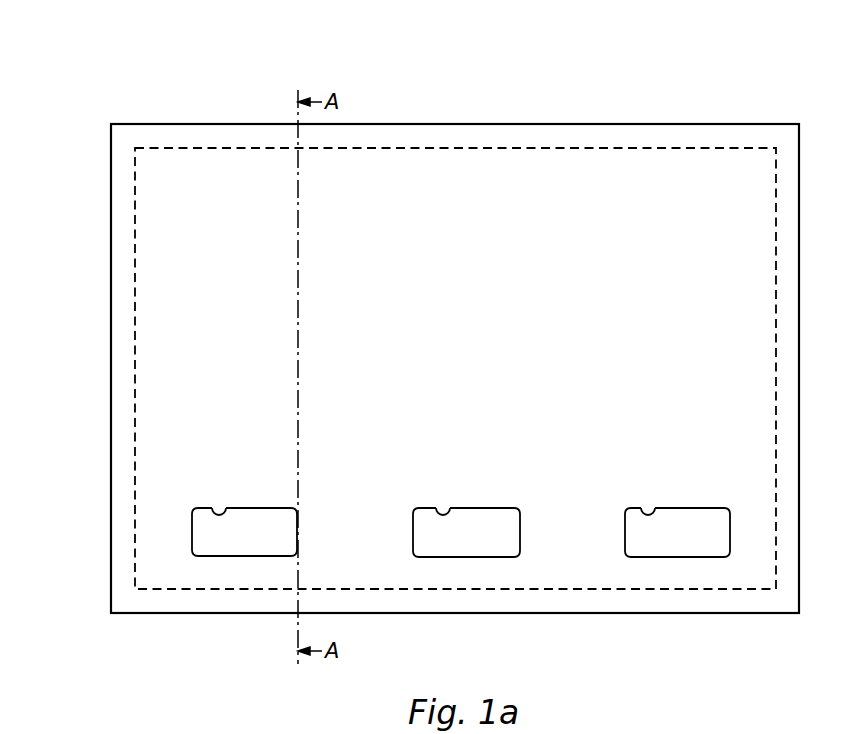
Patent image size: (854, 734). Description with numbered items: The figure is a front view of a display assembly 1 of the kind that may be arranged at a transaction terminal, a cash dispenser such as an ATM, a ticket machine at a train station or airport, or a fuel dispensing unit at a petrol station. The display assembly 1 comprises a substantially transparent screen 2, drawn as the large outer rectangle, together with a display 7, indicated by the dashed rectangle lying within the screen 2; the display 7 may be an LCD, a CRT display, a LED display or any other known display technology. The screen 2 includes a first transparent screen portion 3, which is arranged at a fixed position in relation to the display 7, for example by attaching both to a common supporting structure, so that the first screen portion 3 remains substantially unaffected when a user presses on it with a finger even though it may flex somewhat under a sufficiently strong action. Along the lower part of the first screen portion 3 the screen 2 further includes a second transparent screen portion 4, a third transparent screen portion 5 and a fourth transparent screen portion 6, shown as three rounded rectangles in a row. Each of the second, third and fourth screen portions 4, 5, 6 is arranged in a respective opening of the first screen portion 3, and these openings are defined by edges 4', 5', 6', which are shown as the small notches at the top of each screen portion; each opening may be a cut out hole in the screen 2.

The display assembly 1 is at (120, 55).
The screen 2 is at (237, 100).
The first transparent screen portion 3 is at (447, 124).
The display 7 is at (568, 148).
The second transparent screen portion 4 is at (230, 587).
The edge 4' is at (198, 479).
The third transparent screen portion 5 is at (457, 587).
The edge 5' is at (421, 480).
The fourth transparent screen portion 6 is at (662, 587).
The edge 6' is at (626, 480).